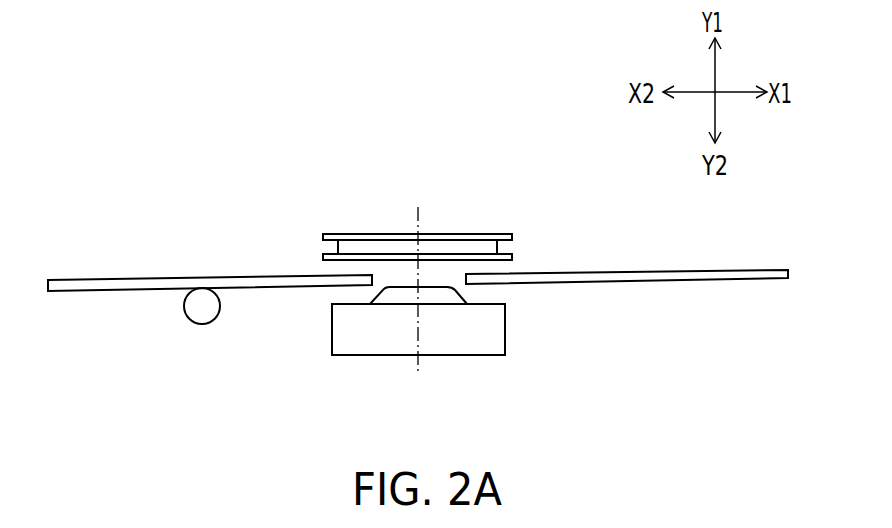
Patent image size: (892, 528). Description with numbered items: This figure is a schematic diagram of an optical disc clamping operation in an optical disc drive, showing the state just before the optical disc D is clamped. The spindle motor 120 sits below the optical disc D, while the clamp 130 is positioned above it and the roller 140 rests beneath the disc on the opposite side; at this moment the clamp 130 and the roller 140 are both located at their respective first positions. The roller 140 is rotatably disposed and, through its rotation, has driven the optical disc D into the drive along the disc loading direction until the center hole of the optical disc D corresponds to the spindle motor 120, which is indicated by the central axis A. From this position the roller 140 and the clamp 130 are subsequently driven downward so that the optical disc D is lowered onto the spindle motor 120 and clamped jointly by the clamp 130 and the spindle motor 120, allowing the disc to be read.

The spindle motor 120 is at (493, 330).
The clamp 130 is at (477, 243).
The roller 140 is at (200, 317).
The optical disc D is at (173, 285).
The axis A is at (416, 274).